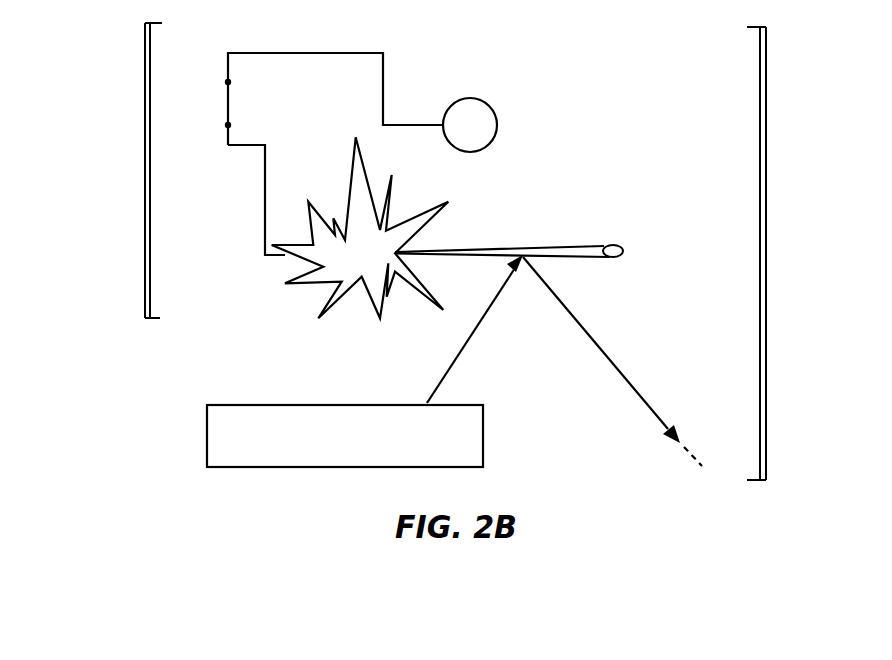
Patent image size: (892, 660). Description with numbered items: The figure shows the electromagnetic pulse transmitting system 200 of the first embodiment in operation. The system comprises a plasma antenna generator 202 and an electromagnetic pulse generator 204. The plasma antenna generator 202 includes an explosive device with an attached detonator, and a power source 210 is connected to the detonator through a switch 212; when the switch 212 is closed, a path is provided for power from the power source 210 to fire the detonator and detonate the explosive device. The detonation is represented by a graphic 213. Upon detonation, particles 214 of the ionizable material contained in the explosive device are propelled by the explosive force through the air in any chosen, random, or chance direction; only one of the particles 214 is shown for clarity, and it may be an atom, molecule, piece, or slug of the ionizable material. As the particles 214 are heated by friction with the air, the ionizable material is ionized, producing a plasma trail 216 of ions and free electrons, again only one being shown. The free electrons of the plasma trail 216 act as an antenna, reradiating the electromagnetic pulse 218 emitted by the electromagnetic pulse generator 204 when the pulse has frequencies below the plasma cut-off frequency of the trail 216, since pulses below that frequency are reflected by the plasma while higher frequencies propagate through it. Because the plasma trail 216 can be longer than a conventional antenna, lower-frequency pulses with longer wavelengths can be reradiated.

The electromagnetic pulse transmitting system 200 is at (766, 166).
The plasma antenna generator 202 is at (145, 187).
The electromagnetic pulse generator 204 is at (483, 417).
The power source 210 is at (493, 116).
The switch 212 is at (228, 107).
The graphic 213 is at (412, 228).
The particles 214 is at (623, 249).
The plasma trail 216 is at (548, 252).
The electromagnetic pulse 218 is at (445, 374).